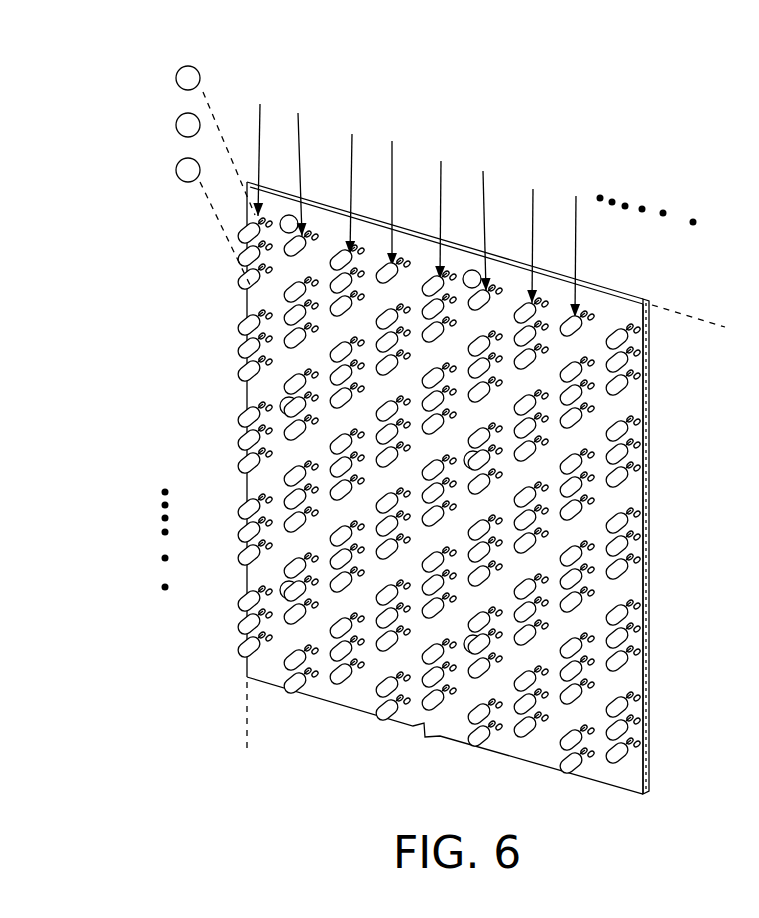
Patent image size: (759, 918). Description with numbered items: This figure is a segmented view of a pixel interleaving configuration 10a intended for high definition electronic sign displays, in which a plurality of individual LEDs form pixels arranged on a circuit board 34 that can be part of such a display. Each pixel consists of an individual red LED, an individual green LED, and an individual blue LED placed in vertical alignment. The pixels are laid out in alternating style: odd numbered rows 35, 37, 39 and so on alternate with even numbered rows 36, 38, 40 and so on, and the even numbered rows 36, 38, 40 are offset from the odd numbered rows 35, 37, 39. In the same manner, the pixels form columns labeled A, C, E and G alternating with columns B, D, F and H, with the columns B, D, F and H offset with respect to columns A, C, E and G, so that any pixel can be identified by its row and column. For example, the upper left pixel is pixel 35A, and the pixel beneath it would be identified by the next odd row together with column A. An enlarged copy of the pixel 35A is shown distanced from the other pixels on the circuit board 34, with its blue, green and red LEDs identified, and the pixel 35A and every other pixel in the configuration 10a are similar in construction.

The pixel interleaving configuration 10a is at (127, 148).
The circuit board 34 is at (486, 488).
The odd numbered row 35 is at (210, 237).
The pixel 35A is at (174, 169).
The even numbered row 36 is at (278, 303).
The odd numbered row 37 is at (208, 335).
The even numbered row 38 is at (277, 405).
The odd numbered row 39 is at (208, 432).
The even numbered row 40 is at (278, 500).